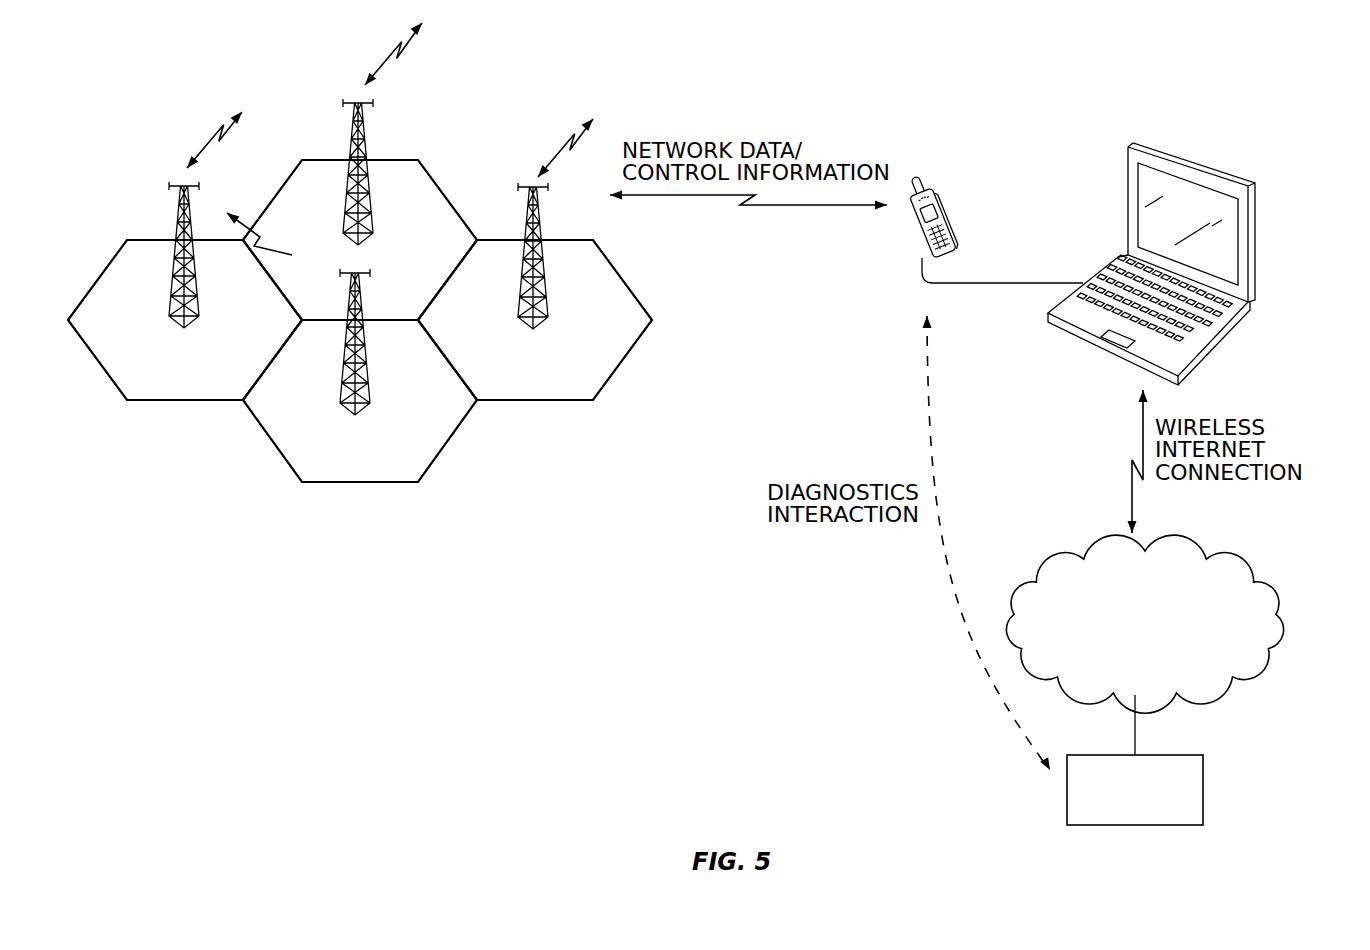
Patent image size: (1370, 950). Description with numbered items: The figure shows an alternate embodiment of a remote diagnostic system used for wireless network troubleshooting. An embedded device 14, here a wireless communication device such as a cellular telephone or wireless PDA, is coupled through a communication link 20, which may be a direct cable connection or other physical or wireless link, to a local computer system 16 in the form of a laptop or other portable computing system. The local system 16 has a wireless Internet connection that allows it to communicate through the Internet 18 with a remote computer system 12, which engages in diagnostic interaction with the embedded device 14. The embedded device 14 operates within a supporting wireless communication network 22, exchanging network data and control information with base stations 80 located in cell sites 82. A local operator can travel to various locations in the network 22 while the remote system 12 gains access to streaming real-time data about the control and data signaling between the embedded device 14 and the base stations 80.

The remote computer system 12 is at (1147, 801).
The embedded device 14 is at (914, 246).
The local computer system 16 is at (1208, 264).
The Internet 18 is at (1068, 684).
The communication link 20 is at (993, 284).
The wireless communication network 22 is at (371, 567).
The base station 80 is at (171, 319).
The cell site 82 is at (285, 183).